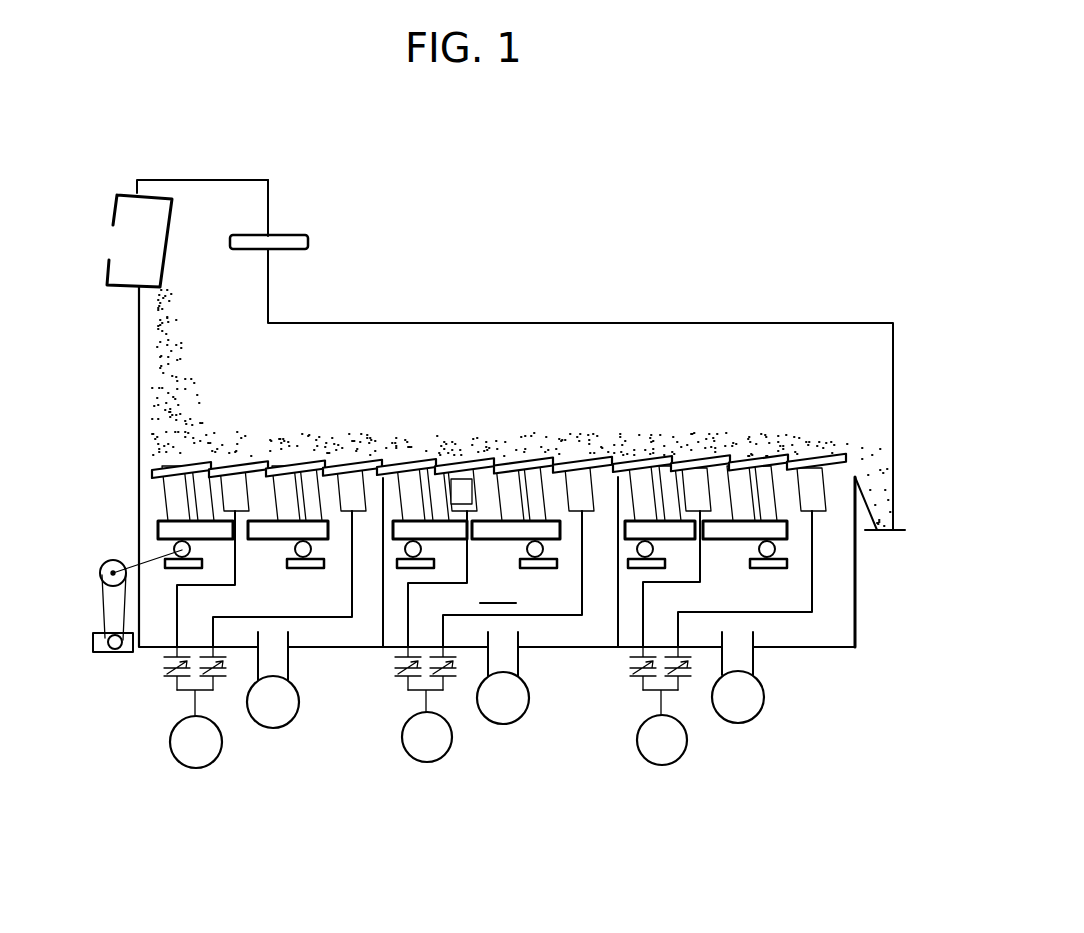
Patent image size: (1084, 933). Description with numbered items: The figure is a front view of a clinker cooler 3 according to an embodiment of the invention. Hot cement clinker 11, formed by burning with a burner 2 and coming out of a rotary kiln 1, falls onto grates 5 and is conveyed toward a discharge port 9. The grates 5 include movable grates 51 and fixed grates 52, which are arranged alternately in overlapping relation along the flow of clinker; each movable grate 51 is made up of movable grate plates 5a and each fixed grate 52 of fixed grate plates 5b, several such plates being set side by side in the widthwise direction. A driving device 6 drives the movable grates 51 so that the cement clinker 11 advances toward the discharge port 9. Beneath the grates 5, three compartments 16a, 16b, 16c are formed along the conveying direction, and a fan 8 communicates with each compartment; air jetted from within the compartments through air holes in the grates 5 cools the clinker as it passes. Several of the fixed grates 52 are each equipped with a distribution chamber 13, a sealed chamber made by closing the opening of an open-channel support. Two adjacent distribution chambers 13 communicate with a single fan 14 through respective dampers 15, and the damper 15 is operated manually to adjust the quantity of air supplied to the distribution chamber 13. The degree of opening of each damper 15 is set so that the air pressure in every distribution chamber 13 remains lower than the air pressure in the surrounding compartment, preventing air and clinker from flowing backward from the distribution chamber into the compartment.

The rotary kiln 1 is at (125, 192).
The burner 2 is at (308, 241).
The clinker cooler 3 is at (620, 323).
The grates 5 is at (461, 423).
The movable grate plate 5a is at (165, 470).
The fixed grate plate 5b is at (236, 460).
The movable grate 51 is at (143, 432).
The fixed grate 52 is at (277, 423).
The driving device 6 is at (95, 655).
The fan 8 is at (275, 728).
The discharge port 9 is at (895, 500).
The cement clinker 11 is at (693, 440).
The distribution chamber 13 is at (242, 493).
The fan 14 is at (197, 768).
The damper 15 is at (167, 667).
The first compartment 16a is at (267, 617).
The second compartment 16b is at (583, 635).
The third compartment 16c is at (832, 630).